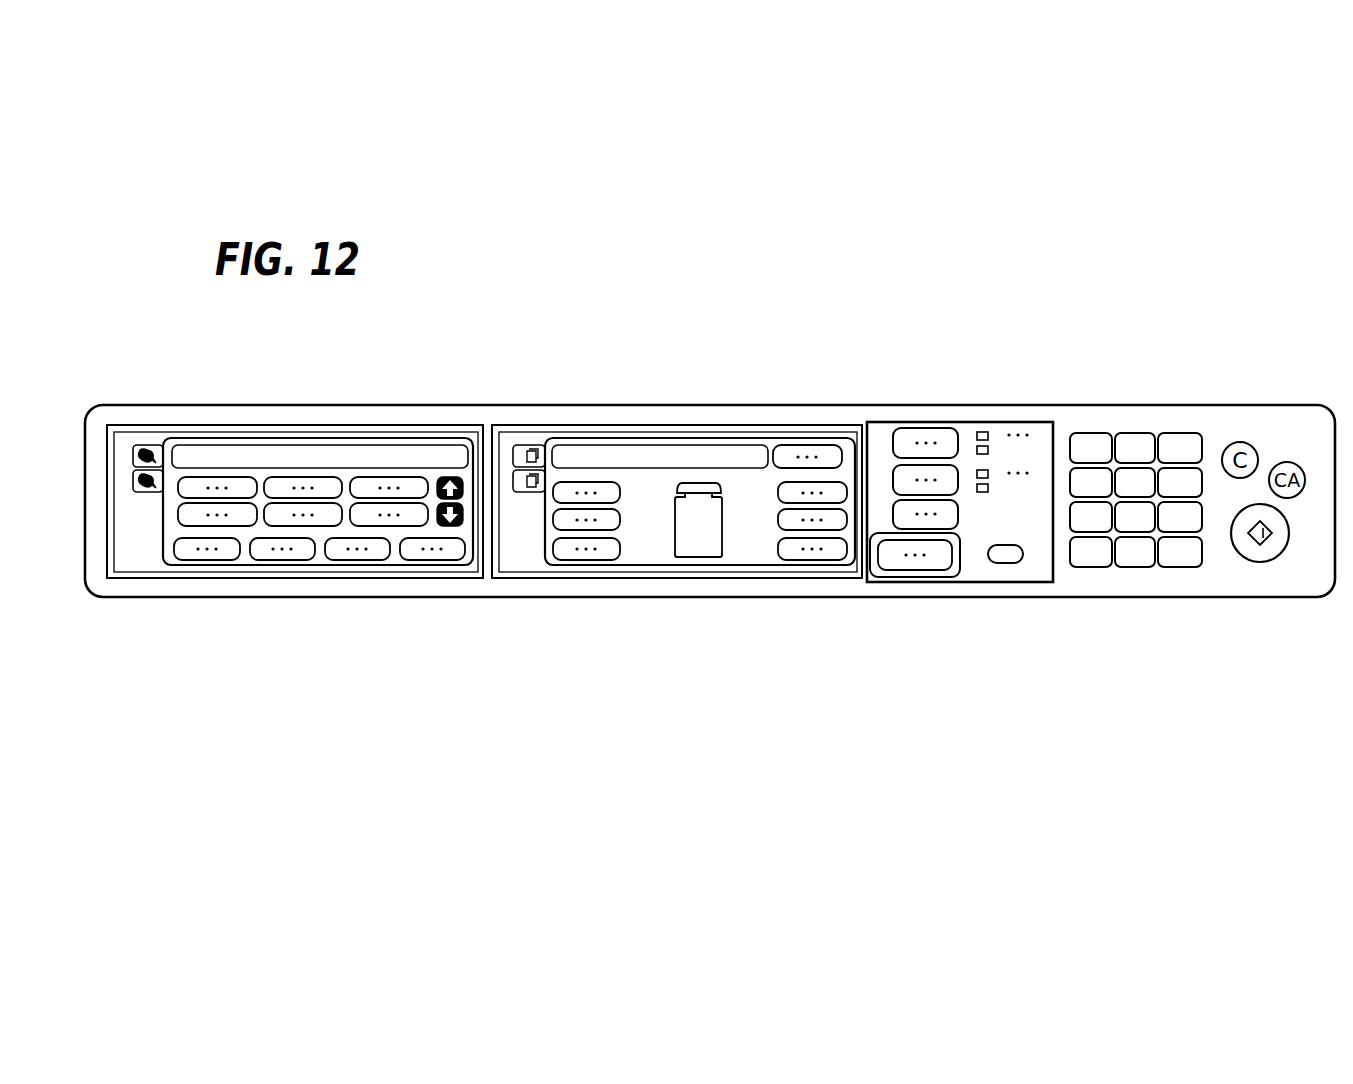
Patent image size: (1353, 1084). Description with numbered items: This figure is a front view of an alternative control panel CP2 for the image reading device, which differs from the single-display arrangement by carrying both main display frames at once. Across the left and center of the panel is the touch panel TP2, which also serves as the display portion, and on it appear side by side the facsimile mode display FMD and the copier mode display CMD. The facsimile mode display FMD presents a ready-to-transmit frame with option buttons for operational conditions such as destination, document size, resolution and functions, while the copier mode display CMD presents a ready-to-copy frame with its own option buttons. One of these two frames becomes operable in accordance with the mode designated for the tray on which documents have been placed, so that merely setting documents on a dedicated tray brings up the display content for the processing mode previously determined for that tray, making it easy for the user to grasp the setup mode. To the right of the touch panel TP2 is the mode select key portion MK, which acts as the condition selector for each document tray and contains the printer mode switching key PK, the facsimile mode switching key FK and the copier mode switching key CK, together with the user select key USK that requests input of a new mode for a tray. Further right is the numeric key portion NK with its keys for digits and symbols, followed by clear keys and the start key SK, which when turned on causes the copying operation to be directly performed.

The control panel CP2 is at (1296, 336).
The touch panel TP2 is at (705, 403).
The facsimile mode display FMD is at (145, 558).
The copier mode display CMD is at (653, 557).
The mode select key portion MK is at (982, 464).
The printer mode switching key PK is at (913, 428).
The facsimile mode switching key FK is at (893, 478).
The copier mode switching key CK is at (893, 511).
The user select key USK is at (1005, 563).
The numeric key portion NK is at (1098, 403).
The start key SK is at (1258, 562).